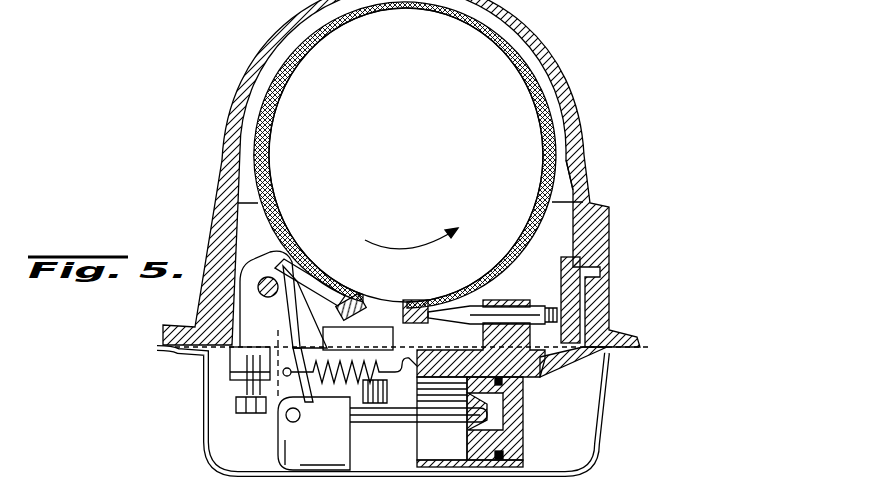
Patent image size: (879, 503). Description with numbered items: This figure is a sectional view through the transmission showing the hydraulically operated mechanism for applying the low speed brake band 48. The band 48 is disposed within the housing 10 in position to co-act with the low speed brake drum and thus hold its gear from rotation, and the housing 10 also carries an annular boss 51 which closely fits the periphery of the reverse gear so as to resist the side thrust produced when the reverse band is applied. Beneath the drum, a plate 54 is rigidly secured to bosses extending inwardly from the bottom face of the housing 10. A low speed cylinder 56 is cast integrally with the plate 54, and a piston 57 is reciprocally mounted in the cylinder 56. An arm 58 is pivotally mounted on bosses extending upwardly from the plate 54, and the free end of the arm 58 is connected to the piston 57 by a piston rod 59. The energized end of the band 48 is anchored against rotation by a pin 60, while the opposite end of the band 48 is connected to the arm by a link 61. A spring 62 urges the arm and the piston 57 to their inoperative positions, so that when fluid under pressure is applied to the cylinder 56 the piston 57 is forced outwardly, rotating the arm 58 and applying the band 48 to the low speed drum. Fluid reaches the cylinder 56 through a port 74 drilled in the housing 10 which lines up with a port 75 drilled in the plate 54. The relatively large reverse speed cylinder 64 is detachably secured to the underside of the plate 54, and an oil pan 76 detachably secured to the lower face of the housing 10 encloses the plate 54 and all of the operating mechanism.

The housing 10 is at (557, 77).
The low-speed band 48 is at (272, 126).
The annular boss 51 is at (565, 183).
The plate 54 is at (438, 360).
The low speed cylinder 56 is at (470, 422).
The piston 57 is at (495, 432).
The arm 58 is at (296, 328).
The piston rod 59 is at (406, 422).
The pin 60 is at (513, 313).
The link 61 is at (318, 290).
The spring 62 is at (338, 352).
The reverse speed cylinder 64 is at (314, 433).
The port 74 is at (583, 310).
The port 75 is at (556, 379).
The oil pan 76 is at (597, 457).